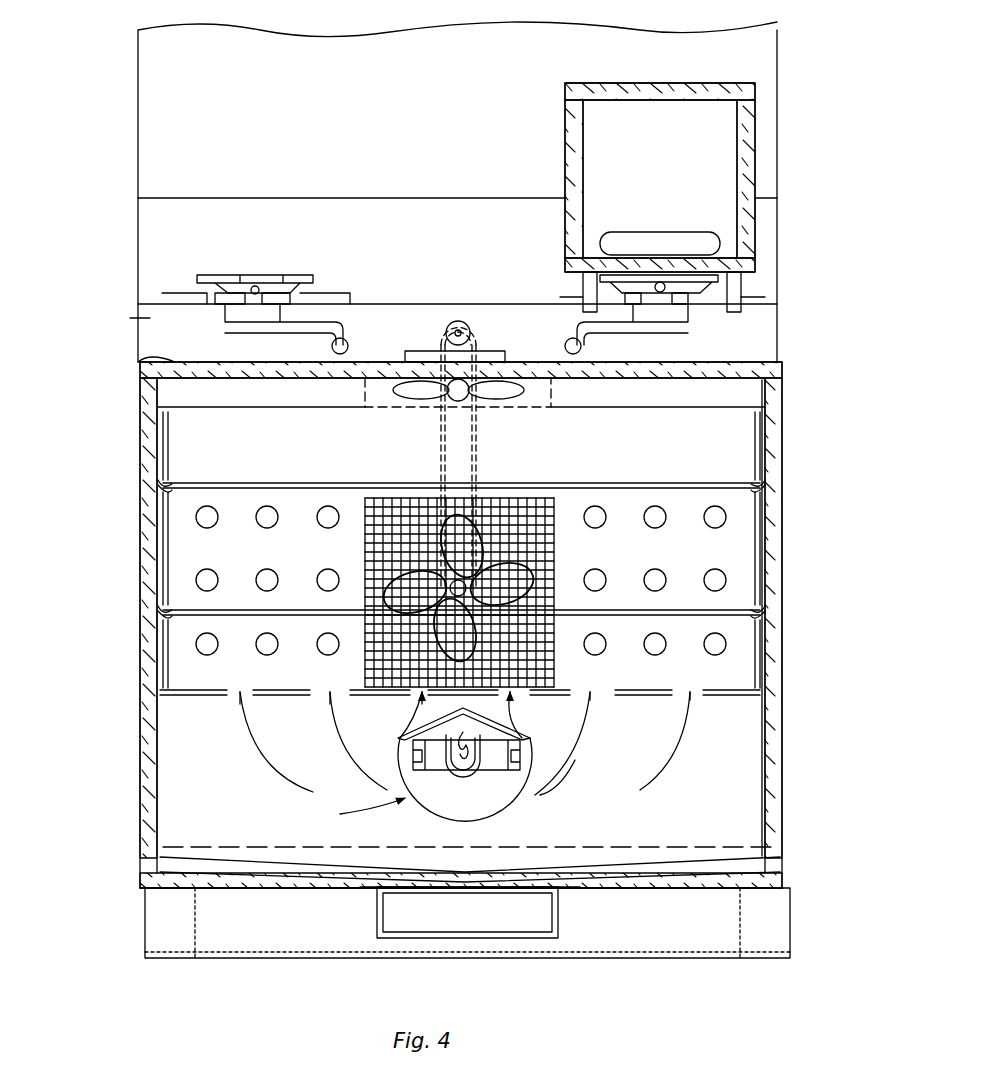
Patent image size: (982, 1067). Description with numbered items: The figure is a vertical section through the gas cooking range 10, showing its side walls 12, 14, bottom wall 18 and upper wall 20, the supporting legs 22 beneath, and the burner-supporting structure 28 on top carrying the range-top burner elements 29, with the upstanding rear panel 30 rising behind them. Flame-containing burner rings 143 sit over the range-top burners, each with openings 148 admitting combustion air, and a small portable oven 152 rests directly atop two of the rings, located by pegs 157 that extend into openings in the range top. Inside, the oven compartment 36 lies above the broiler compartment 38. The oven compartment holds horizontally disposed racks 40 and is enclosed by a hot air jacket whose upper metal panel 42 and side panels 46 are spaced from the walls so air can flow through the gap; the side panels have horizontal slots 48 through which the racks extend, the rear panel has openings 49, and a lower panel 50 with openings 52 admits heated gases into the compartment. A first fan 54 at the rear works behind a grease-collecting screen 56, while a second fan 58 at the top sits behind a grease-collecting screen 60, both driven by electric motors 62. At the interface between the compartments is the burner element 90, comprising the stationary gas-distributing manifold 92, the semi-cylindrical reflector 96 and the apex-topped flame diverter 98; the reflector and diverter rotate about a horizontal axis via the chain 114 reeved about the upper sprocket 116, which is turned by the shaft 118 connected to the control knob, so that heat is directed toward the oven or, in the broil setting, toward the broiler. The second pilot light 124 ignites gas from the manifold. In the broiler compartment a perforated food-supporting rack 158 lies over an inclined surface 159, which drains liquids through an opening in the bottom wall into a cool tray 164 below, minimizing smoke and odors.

The gas cooking range 10 is at (118, 196).
The side wall 12 is at (136, 516).
The side wall 14 is at (774, 418).
The bottom wall 18 is at (682, 874).
The upper wall 20 is at (178, 360).
The supporting legs 22 is at (150, 918).
The burner-supporting structure 28 is at (150, 318).
The range-top burner elements 29 is at (322, 278).
The upstanding rear panel 30 is at (346, 206).
The oven compartment 36 is at (742, 540).
The broiler compartment 38 is at (742, 796).
The racks 40 is at (645, 484).
The upper metal panel 42 is at (598, 407).
The side panels 46 is at (169, 562).
The slots 48 is at (166, 482).
The openings 49 is at (322, 510).
The lower panel 50 is at (362, 696).
The openings 52 is at (323, 690).
The first fan 54 is at (512, 582).
The grease-collecting screen 56 is at (553, 650).
The second fan 58 is at (410, 392).
The grease-collecting screen 60 is at (497, 407).
The electric motors 62 is at (500, 352).
The burner element 90 is at (354, 811).
The gas-distributing manifold 92 is at (520, 756).
The reflector 96 is at (508, 800).
The flame diverter 98 is at (515, 716).
The chain 114 is at (478, 480).
The sprocket 116 is at (470, 336).
The shaft 118 is at (447, 328).
The second pilot light 124 is at (466, 772).
The burner rings 143 is at (268, 270).
The openings 148 is at (254, 287).
The portable oven 152 is at (558, 120).
The pegs 157 is at (583, 297).
The food-supporting rack 158 is at (612, 848).
The inclined surface 159 is at (340, 852).
The tray 164 is at (552, 916).